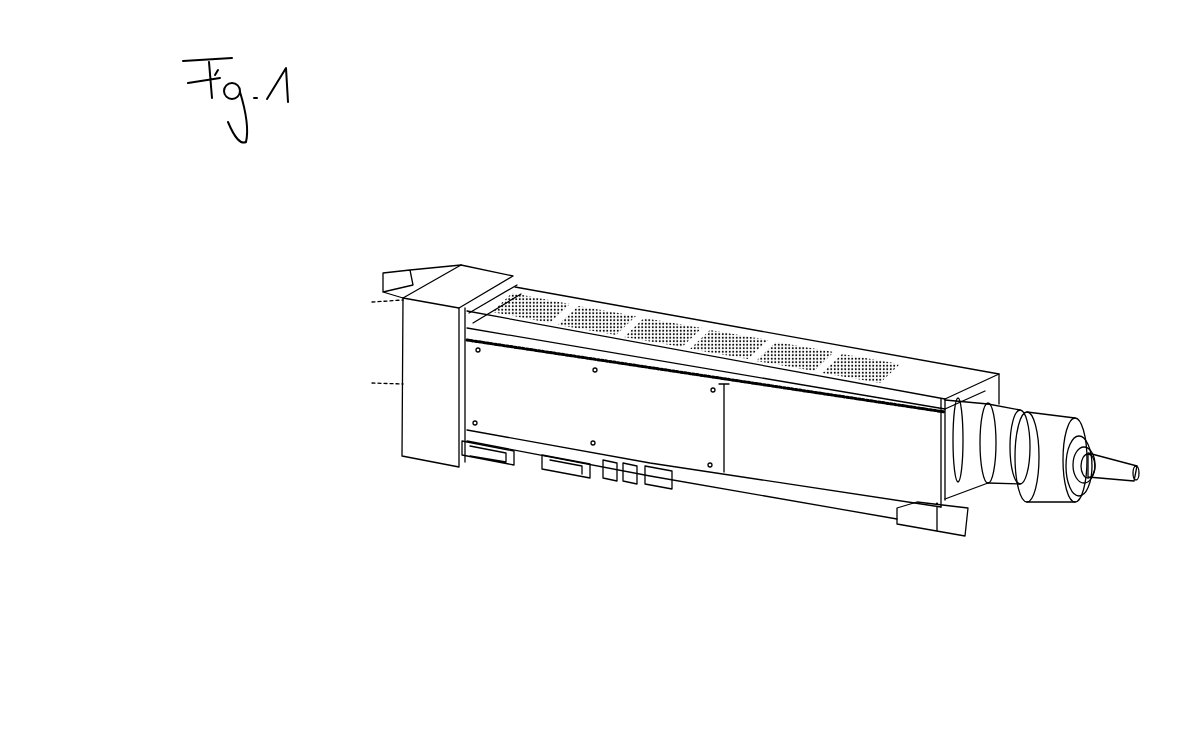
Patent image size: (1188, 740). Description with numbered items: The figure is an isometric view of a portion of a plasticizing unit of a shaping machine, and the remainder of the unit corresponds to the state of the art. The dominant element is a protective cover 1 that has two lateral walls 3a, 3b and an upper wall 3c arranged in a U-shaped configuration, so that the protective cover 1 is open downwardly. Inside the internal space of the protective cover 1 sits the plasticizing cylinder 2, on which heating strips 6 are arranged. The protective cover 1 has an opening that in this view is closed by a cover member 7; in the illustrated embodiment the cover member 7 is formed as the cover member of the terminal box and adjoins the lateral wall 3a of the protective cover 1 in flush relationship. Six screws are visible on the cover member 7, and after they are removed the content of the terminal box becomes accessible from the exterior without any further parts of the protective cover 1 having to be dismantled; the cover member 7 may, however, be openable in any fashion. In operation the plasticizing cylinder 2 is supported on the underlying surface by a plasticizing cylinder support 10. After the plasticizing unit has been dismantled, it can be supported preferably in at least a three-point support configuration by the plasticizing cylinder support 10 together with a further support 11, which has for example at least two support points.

The protective cover 1 is at (905, 344).
The plasticizing cylinder 2 is at (1032, 420).
The lateral wall 3a is at (807, 458).
The lateral wall 3b is at (982, 392).
The upper wall 3c is at (638, 318).
The heating strips 6 is at (1040, 488).
The cover member 7 is at (540, 403).
The plasticizing cylinder support 10 is at (932, 518).
The further support 11 is at (428, 417).